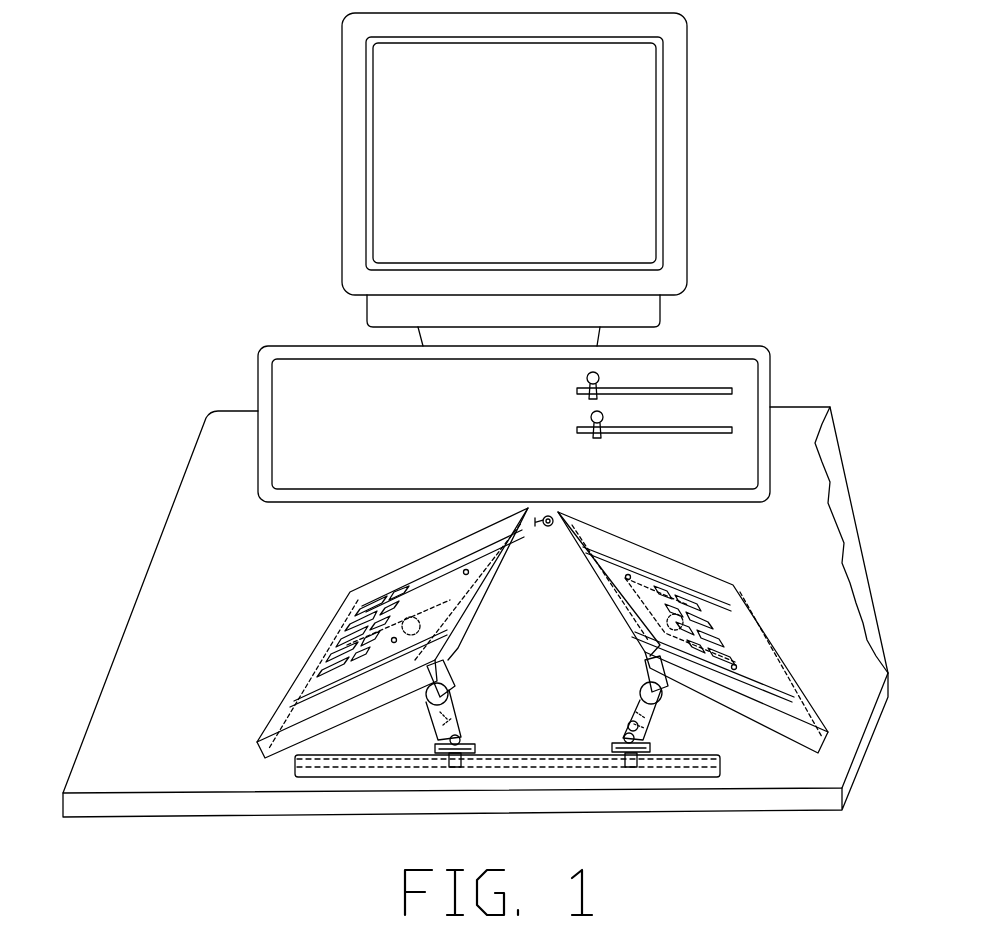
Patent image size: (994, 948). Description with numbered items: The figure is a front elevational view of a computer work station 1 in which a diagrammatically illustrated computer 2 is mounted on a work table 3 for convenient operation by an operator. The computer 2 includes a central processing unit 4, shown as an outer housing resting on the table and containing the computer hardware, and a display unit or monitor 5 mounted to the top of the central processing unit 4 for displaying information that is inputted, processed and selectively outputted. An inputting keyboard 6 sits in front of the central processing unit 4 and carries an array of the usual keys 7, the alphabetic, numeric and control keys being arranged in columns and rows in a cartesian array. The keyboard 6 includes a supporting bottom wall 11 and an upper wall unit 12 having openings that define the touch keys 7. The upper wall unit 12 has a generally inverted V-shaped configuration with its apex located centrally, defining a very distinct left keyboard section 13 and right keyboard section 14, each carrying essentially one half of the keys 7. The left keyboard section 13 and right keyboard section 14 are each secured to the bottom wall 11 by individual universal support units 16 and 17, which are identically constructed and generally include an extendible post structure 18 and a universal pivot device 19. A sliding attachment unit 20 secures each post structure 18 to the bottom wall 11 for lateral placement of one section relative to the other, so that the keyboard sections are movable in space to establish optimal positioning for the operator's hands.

The computer work station 1 is at (858, 217).
The central processing unit 2 is at (740, 295).
The work table 3 is at (749, 796).
The central processing unit 4 is at (775, 371).
The display unit or monitor 5 is at (698, 108).
The inputting keyboard 6 is at (776, 621).
The keys 7 is at (383, 598).
The supporting bottom wall 11 is at (724, 767).
The upper wall unit 12 is at (615, 620).
The left keyboard section 13 is at (468, 547).
The right keyboard section 14 is at (637, 547).
The universal support unit 16 is at (458, 699).
The universal support unit 17 is at (628, 702).
The extendible post structure 18 is at (645, 727).
The universal pivot device 19 is at (608, 748).
The sliding attachment unit 20 is at (640, 778).